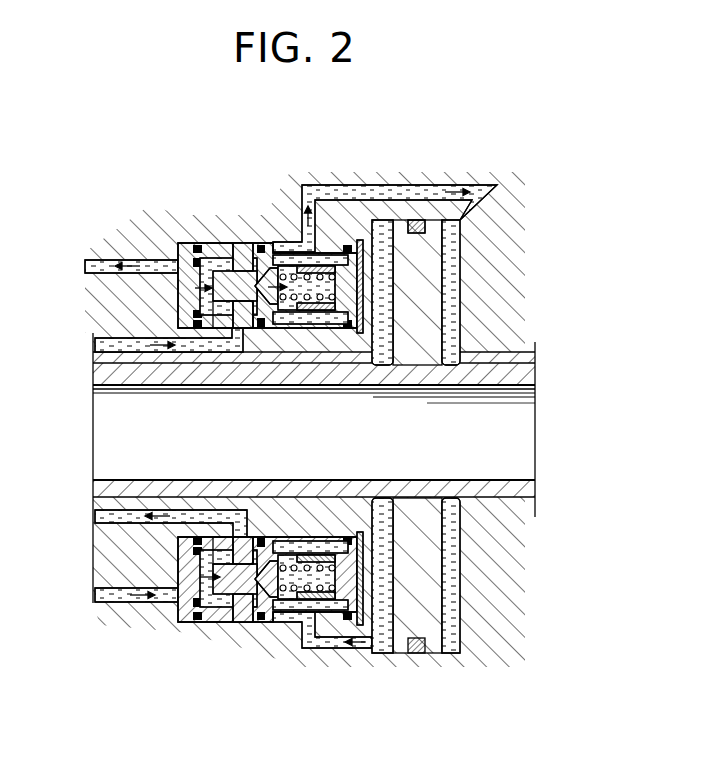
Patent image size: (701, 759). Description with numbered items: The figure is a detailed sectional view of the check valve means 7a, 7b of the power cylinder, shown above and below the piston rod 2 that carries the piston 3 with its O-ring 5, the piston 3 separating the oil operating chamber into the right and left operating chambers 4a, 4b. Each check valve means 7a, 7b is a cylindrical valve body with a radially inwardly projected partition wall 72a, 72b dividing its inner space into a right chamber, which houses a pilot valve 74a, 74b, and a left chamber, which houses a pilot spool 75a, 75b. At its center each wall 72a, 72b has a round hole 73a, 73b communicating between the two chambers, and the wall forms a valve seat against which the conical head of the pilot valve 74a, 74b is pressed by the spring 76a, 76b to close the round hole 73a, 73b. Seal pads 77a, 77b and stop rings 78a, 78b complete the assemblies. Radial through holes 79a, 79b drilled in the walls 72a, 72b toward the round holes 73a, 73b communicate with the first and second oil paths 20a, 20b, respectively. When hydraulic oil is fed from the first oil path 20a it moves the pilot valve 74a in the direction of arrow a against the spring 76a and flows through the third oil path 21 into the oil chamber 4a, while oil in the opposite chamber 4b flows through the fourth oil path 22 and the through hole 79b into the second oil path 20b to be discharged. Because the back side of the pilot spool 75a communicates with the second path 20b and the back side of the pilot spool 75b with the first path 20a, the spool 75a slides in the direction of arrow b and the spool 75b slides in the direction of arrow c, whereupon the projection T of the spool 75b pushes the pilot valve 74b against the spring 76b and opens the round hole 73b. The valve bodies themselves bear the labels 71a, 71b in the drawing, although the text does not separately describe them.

The piston rod 2 is at (143, 375).
The piston 3 is at (428, 325).
The operating chamber 4a is at (453, 281).
The operating chamber 4b is at (389, 230).
The O-ring 5 is at (421, 221).
The first oil path 20a is at (100, 340).
The second oil path 20b is at (90, 262).
The third oil path 21 is at (330, 192).
The fourth oil path 22 is at (330, 652).
The first check valve means 7a is at (251, 157).
The second check valve means 7b is at (258, 737).
The valve body 71a is at (178, 243).
The valve body 71b is at (180, 621).
The partition wall 72a is at (228, 262).
The partition wall 72b is at (237, 623).
The round hole 73a is at (245, 330).
The round hole 73b is at (250, 545).
The pilot valve 74a is at (300, 312).
The pilot valve 74b is at (272, 612).
The pilot spool 75a is at (195, 305).
The pilot spool 75b is at (203, 563).
The spring 76a is at (310, 326).
The spring 76b is at (312, 545).
The seal pad 77a is at (342, 240).
The seal pad 77b is at (342, 532).
The stop ring 78a is at (362, 330).
The stop ring 78b is at (382, 500).
The radial through hole 79a is at (241, 243).
The radial through hole 79b is at (242, 537).
The projection T is at (215, 330).
The arrow a is at (287, 289).
The arrow b is at (190, 291).
The arrow c is at (195, 575).